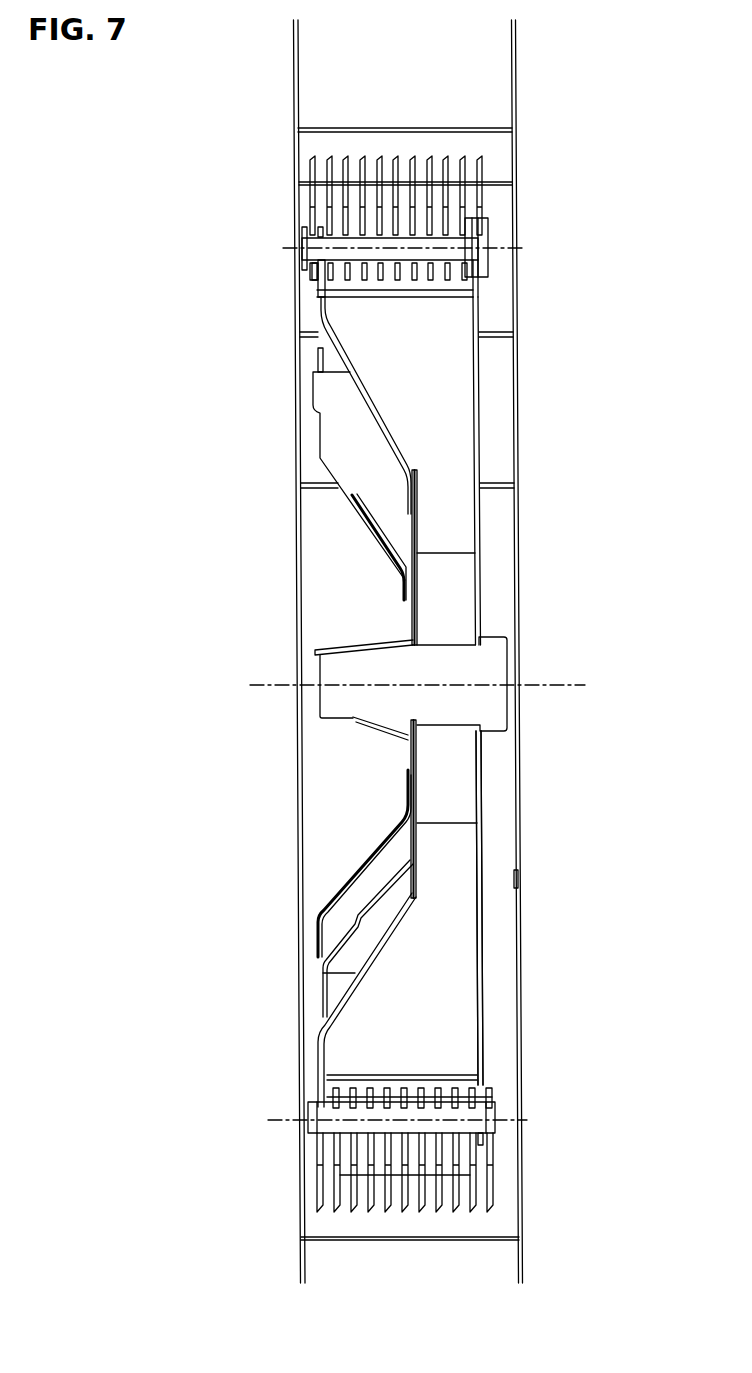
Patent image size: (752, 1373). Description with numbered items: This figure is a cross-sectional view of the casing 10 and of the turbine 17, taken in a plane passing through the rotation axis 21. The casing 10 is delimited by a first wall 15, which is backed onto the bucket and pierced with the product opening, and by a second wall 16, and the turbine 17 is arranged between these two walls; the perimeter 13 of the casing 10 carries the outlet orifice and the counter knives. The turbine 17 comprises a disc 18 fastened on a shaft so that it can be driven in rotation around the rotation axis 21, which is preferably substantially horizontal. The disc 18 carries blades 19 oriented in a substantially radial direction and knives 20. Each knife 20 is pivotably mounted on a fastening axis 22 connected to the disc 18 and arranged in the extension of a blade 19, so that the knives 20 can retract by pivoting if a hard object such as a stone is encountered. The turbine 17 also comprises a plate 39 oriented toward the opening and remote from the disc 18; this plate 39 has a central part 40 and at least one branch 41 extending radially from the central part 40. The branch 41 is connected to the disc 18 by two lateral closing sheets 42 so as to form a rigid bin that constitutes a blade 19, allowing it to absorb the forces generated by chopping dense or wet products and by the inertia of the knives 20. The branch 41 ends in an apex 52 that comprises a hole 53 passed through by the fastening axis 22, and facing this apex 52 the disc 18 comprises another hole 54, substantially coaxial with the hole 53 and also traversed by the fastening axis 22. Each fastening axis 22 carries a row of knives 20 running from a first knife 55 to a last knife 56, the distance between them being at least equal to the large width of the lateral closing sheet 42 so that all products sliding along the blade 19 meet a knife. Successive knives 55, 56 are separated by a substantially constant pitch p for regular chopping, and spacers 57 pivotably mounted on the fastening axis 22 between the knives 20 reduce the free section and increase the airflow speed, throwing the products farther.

The casing 10 is at (416, 651).
The perimeter 13 is at (500, 981).
The first wall 15 is at (294, 826).
The second wall 16 is at (520, 889).
The turbine 17 is at (483, 1032).
The disc 18 is at (485, 855).
The blade 19 is at (375, 1025).
The knife 20 is at (434, 162).
The rotation axis 21 is at (550, 685).
The fastening axis 22 is at (320, 256).
The plate 39 is at (368, 422).
The central part 40 is at (413, 613).
The branch 41 is at (355, 393).
The lateral closing sheet 42 is at (377, 462).
The apex 52 is at (316, 278).
The hole 53 is at (305, 232).
The another hole 54 is at (472, 268).
The first knife 55 is at (312, 172).
The last knife 56 is at (483, 170).
The spacer 57 is at (467, 208).
The pitch p is at (435, 1217).